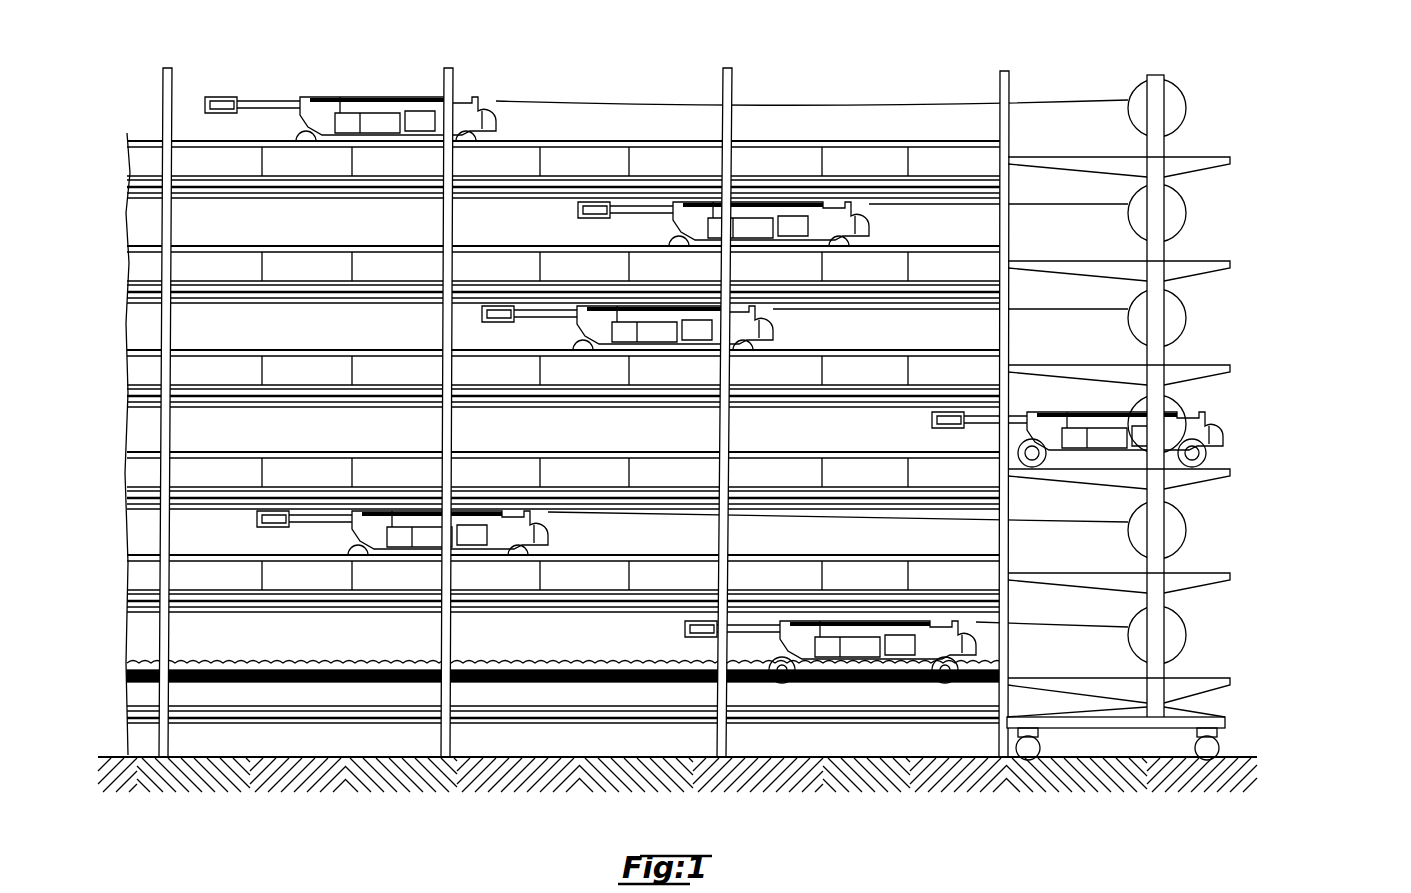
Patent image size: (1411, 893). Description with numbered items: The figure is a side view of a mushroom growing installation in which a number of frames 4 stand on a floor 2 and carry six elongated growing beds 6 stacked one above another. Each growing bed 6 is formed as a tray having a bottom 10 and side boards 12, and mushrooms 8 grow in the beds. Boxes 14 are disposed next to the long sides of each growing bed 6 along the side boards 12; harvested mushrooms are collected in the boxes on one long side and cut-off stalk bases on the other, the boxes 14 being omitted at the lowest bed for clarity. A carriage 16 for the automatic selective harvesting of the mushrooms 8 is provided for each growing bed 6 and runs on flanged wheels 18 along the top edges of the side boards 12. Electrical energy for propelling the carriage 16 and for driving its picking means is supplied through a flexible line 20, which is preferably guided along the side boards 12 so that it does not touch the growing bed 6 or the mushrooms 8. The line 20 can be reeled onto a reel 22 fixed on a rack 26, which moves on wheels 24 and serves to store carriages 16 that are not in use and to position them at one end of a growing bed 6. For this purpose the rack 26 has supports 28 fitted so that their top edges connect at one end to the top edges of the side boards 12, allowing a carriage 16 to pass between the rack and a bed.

The floor 2 is at (1003, 783).
The frame 4 is at (727, 122).
The growing bed 6 is at (190, 672).
The mushrooms 8 is at (217, 663).
The bottom 10 is at (283, 718).
The side board 12 is at (190, 697).
The box 14 is at (565, 157).
The carriage 16 is at (347, 88).
The flanged wheels 18 is at (785, 681).
The flexible line 20 is at (1040, 98).
The reel 22 is at (1182, 110).
The wheels 24 is at (1220, 748).
The rack 26 is at (1284, 333).
The supports 28 is at (1110, 270).